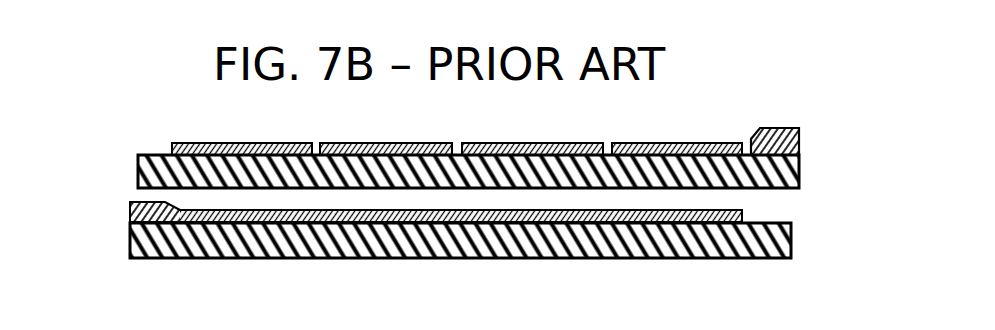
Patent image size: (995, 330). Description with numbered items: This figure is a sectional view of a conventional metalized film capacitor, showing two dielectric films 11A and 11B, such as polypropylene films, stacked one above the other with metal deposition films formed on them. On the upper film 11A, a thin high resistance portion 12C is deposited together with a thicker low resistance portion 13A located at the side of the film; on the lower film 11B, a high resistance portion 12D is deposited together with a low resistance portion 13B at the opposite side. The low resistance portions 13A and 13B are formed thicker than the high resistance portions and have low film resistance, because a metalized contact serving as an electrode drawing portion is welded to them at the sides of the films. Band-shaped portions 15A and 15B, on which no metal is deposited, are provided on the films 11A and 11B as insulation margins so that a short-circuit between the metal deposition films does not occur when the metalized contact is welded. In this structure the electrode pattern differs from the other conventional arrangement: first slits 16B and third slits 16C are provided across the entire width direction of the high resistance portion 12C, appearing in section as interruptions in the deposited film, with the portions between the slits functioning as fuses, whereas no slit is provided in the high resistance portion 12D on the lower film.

The dielectric film 11A is at (800, 168).
The dielectric film 11B is at (791, 247).
The high resistance portion 12C is at (503, 143).
The high resistance portion 12D is at (745, 212).
The low resistance portion 13A is at (790, 127).
The low resistance portion 13B is at (128, 203).
The band-shaped portion 15A is at (160, 155).
The band-shaped portion 15B is at (765, 222).
The first slits 16B is at (455, 145).
The third slits 16C is at (315, 145).